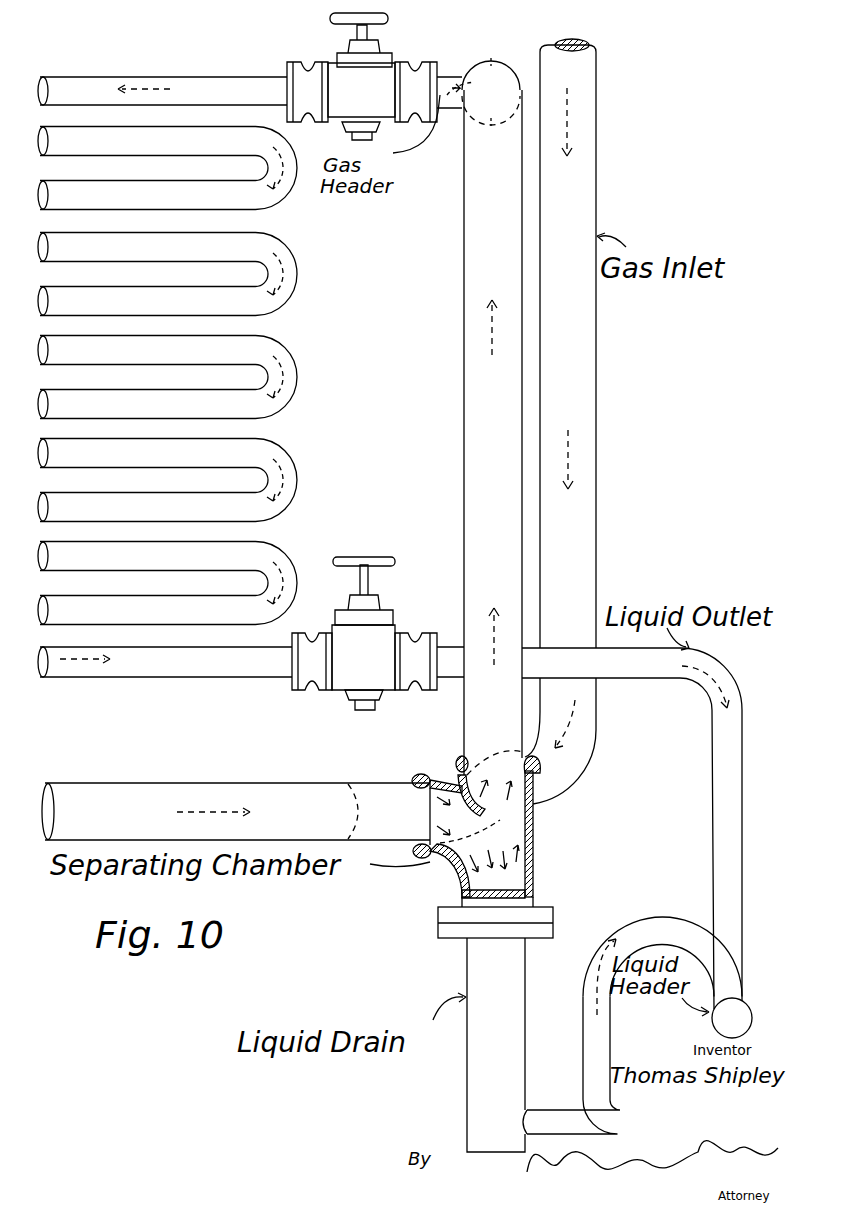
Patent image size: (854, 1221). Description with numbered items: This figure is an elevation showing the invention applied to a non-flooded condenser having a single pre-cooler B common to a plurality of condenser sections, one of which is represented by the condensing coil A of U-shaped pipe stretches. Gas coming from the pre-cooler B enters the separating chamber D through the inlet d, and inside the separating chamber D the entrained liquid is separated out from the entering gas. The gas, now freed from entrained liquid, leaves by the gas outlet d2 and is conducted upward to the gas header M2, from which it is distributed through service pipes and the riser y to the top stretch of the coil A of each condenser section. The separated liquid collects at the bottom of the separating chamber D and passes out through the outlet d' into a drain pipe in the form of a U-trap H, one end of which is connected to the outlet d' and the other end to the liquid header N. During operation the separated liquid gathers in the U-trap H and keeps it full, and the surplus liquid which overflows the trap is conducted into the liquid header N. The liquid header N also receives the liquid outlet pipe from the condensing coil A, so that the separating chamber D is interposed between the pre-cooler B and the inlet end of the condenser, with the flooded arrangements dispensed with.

The condensing coil A is at (283, 553).
The pre-cooler B is at (121, 792).
The separating chamber D is at (534, 835).
The inlet of separating chamber d is at (408, 775).
The outlet at bottom of separating chamber d' is at (494, 870).
The gas outlet of separating chamber d2 is at (477, 775).
The U-trap H is at (653, 918).
The liquid header N is at (712, 1022).
The gas header M2 is at (488, 59).
The riser y is at (448, 84).